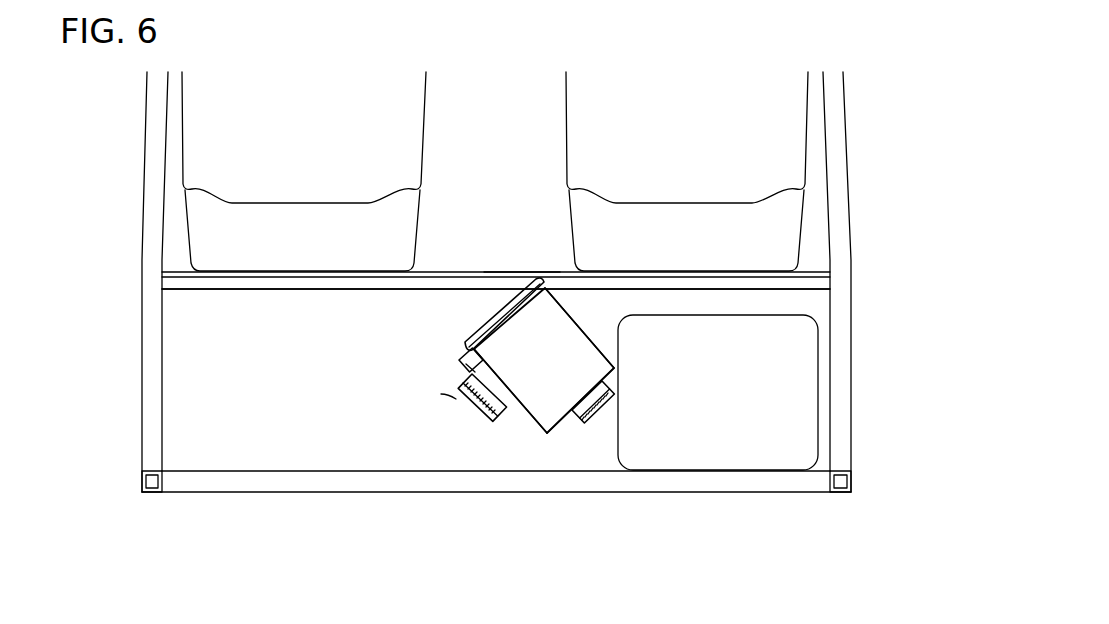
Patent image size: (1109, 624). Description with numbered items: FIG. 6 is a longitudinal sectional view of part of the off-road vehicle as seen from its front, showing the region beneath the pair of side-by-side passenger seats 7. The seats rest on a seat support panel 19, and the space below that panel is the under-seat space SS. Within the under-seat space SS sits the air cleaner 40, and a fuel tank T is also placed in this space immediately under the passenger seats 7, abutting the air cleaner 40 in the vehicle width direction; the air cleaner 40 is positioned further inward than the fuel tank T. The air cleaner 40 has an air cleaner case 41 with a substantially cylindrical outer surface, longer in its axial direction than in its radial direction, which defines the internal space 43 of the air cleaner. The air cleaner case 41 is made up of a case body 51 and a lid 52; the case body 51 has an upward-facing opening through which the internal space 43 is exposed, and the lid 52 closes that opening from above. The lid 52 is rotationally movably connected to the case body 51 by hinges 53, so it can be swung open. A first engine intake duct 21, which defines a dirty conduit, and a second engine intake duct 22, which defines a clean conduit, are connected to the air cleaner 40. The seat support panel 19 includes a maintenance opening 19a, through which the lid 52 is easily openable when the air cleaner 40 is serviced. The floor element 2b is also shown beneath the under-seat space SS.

The passenger seats 7 is at (410, 113).
The seat support panel 19 is at (800, 272).
The maintenance opening 19a is at (512, 268).
The floor panel 2b is at (184, 289).
The air cleaner 40 is at (546, 433).
The air cleaner case 41 is at (523, 418).
The internal space 43 is at (556, 397).
The case body 51 is at (558, 333).
The lid 52 is at (485, 322).
The hinges 53 is at (462, 357).
The first engine intake duct 21 is at (477, 423).
The second engine intake duct 22 is at (600, 415).
The fuel tank T is at (723, 450).
The under-seat space SS is at (287, 396).